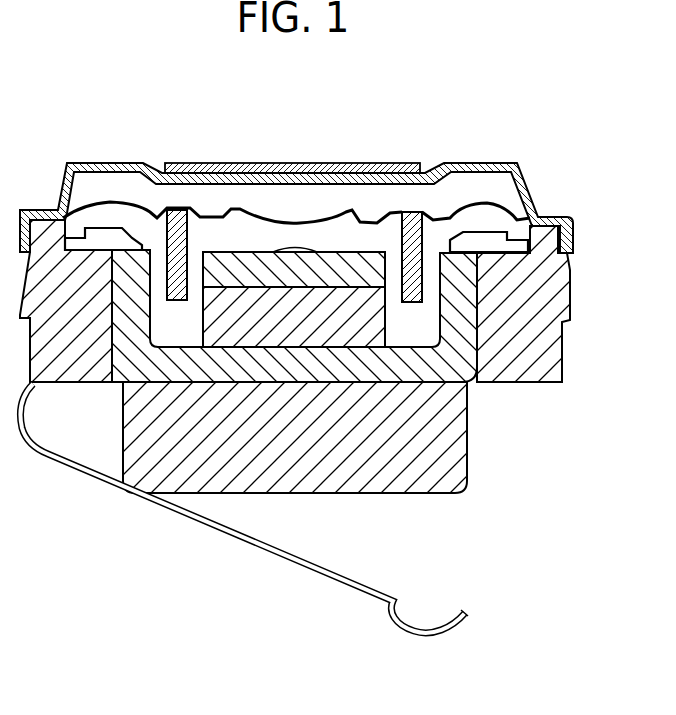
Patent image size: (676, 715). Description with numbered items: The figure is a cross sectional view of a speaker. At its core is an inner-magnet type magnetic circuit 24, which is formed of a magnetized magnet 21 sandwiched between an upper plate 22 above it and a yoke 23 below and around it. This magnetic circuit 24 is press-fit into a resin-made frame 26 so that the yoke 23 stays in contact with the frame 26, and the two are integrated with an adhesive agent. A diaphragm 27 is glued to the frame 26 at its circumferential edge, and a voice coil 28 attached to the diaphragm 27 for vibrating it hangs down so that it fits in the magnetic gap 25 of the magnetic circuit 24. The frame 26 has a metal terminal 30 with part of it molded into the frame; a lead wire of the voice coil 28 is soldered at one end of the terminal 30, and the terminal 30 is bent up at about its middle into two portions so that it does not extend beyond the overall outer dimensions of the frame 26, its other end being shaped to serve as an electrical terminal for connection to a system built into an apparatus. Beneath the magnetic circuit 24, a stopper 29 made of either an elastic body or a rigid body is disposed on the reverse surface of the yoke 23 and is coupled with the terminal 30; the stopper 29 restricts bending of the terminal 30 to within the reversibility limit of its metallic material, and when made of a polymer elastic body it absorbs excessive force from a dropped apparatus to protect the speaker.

The magnet 21 is at (290, 322).
The upper plate 22 is at (341, 280).
The yoke 23 is at (210, 370).
The magnetic circuit 24 is at (113, 633).
The magnetic gap 25 is at (430, 257).
The frame 26 is at (538, 270).
The diaphragm 27 is at (292, 218).
The voice coil 28 is at (173, 212).
The stopper 29 is at (435, 453).
The terminal 30 is at (107, 470).